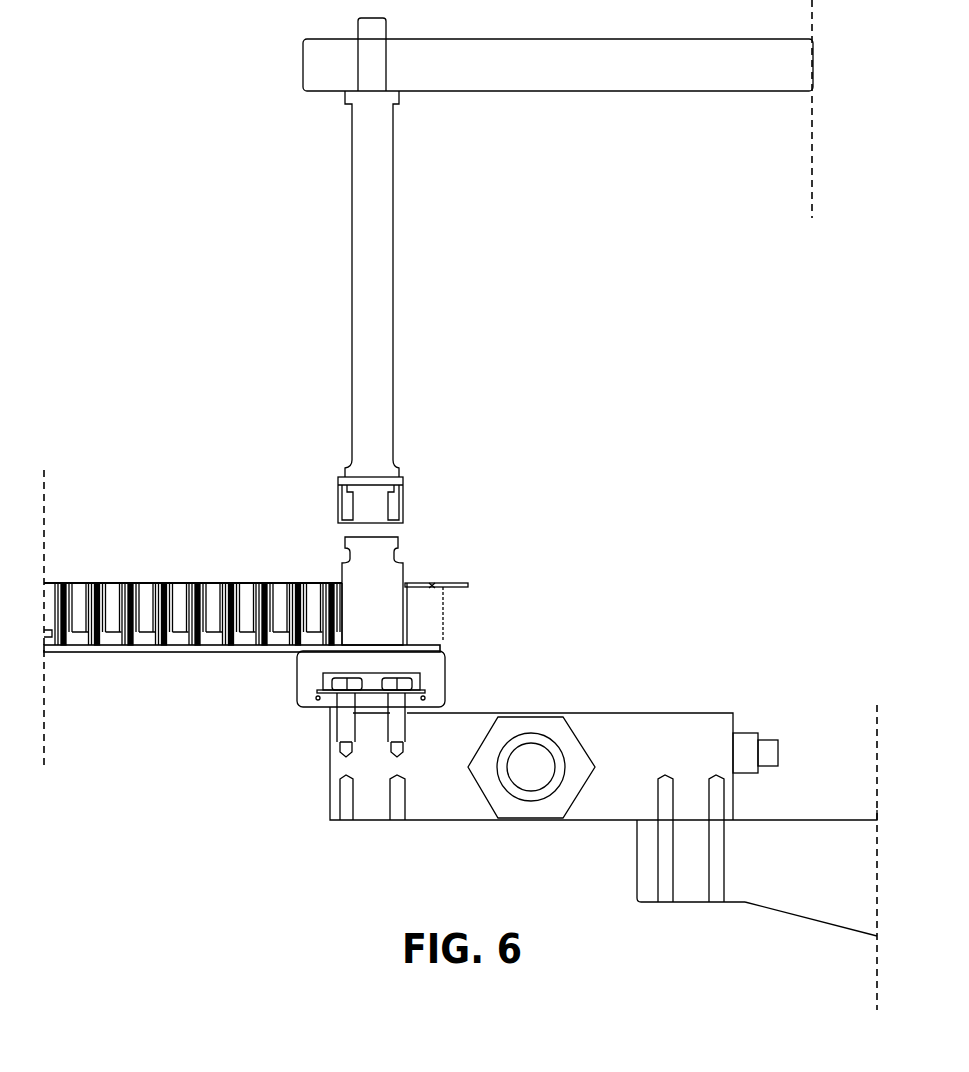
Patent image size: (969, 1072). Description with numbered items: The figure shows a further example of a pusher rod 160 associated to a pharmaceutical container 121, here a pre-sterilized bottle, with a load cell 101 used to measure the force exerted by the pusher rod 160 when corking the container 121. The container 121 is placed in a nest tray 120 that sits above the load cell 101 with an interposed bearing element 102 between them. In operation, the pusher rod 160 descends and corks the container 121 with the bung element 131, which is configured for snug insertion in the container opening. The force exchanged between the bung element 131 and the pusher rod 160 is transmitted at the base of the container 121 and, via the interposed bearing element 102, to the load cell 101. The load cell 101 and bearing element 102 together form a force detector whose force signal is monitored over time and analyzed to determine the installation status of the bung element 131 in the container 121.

The pusher rod 160 is at (373, 225).
The bung element 131 is at (375, 497).
The pharmaceutical container 121 is at (382, 568).
The nest tray 120 is at (312, 584).
The interposed bearing element 102 is at (428, 677).
The load cell 101 is at (604, 700).